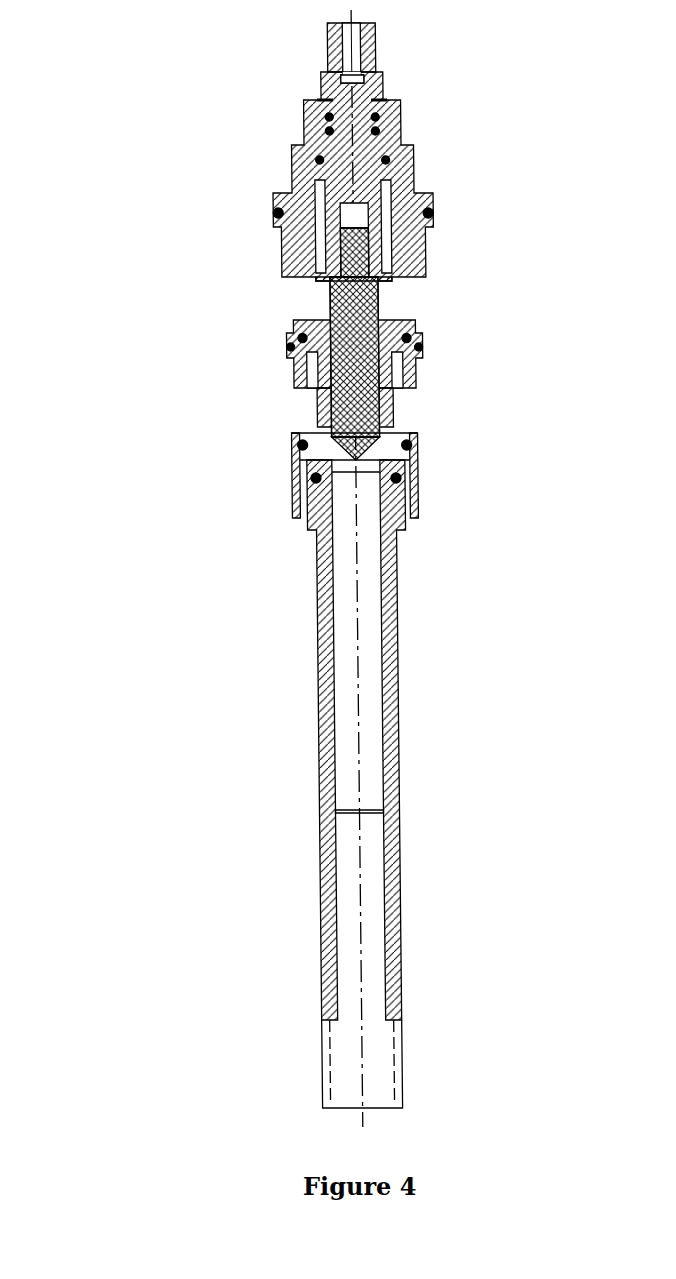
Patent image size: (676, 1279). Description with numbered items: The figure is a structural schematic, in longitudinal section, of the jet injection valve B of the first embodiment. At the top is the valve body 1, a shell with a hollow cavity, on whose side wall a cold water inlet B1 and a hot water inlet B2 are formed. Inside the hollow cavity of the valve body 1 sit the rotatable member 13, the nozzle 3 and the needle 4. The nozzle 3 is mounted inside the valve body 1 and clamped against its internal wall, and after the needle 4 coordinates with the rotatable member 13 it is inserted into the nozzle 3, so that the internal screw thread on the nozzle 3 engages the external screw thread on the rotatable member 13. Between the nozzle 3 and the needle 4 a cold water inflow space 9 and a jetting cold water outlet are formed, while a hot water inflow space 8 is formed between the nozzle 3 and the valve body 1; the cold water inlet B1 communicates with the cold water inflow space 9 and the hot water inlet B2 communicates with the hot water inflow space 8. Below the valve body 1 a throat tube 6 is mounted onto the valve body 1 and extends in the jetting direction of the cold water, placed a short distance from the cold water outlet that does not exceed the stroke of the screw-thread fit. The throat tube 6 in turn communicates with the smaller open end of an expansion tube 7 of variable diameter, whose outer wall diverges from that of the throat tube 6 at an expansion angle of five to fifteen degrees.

The rotatable member 13 is at (322, 80).
The valve body 1 is at (290, 167).
The needle 4 is at (315, 318).
The nozzle 3 is at (315, 393).
The cold water inflow space 9 is at (315, 422).
The hot water inflow space 8 is at (415, 460).
The throat tube 6 is at (395, 682).
The expansion tube 7 is at (388, 912).
The jet injection valve B is at (237, 657).
The cold water inlet B1 is at (403, 297).
The hot water inlet B2 is at (405, 412).